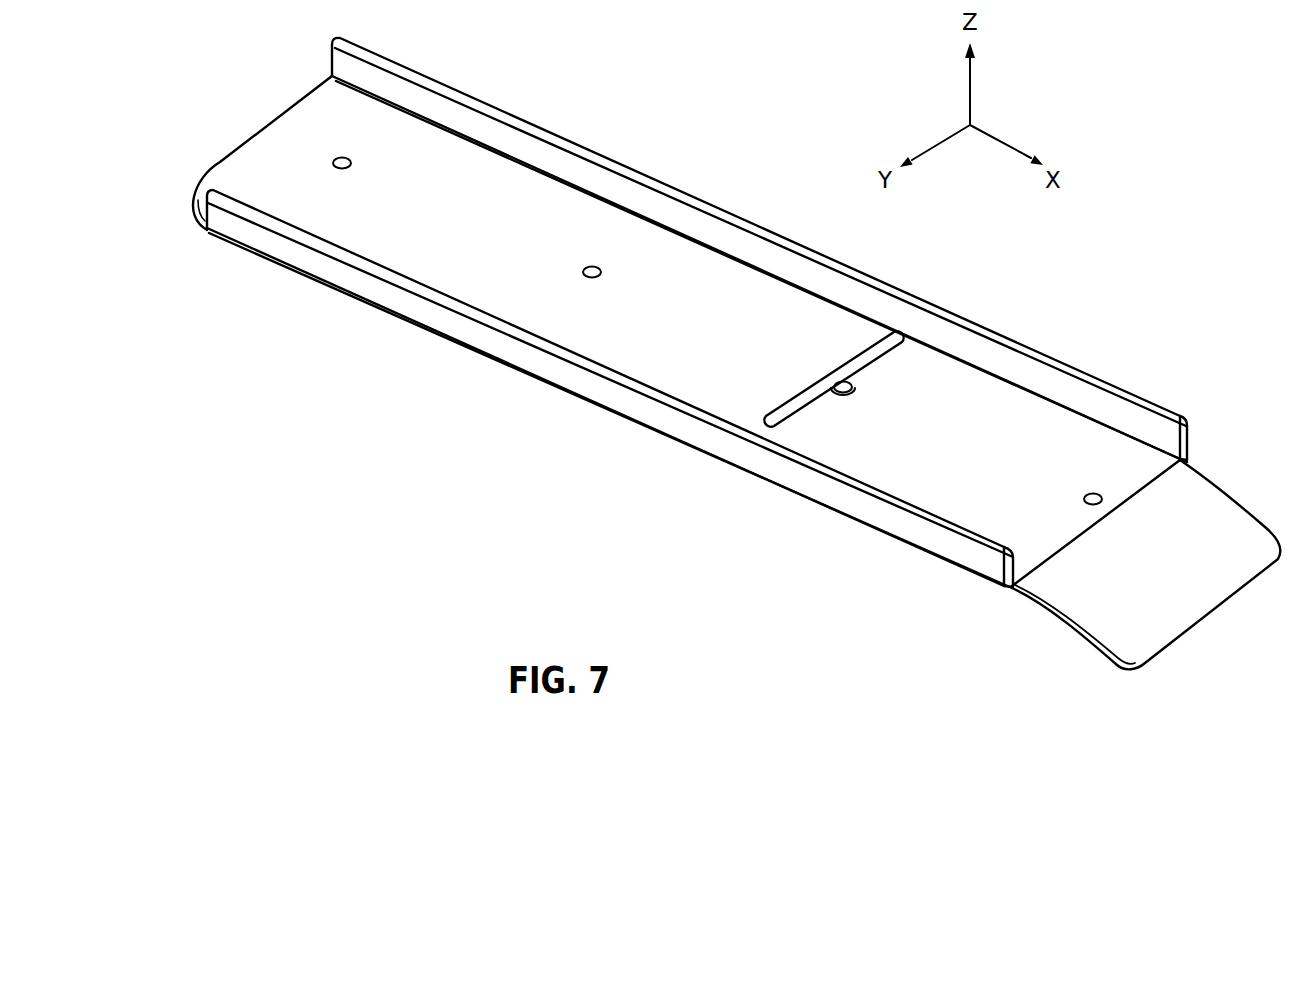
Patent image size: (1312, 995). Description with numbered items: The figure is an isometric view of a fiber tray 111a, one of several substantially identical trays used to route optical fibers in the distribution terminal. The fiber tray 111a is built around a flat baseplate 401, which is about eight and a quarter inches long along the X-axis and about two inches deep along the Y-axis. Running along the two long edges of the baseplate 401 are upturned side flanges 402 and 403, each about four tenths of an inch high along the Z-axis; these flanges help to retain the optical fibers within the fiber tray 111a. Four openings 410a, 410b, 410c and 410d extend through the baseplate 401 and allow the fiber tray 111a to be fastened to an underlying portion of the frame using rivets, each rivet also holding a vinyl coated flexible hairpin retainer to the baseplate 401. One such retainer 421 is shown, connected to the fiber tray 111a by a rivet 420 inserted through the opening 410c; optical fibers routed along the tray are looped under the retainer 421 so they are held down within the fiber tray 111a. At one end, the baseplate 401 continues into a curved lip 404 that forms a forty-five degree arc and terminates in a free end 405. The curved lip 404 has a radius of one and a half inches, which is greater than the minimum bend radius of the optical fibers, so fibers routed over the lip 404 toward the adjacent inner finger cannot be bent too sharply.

The fiber tray 111a is at (440, 417).
The baseplate 401 is at (271, 120).
The side flange 402 is at (1028, 354).
The side flange 403 is at (878, 520).
The curved lip 404 is at (1077, 612).
The free end 405 is at (1215, 618).
The opening 410a is at (352, 160).
The opening 410b is at (583, 271).
The opening 410c is at (857, 386).
The opening 410d is at (1086, 492).
The rivet 420 is at (846, 395).
The retainer 421 is at (818, 385).